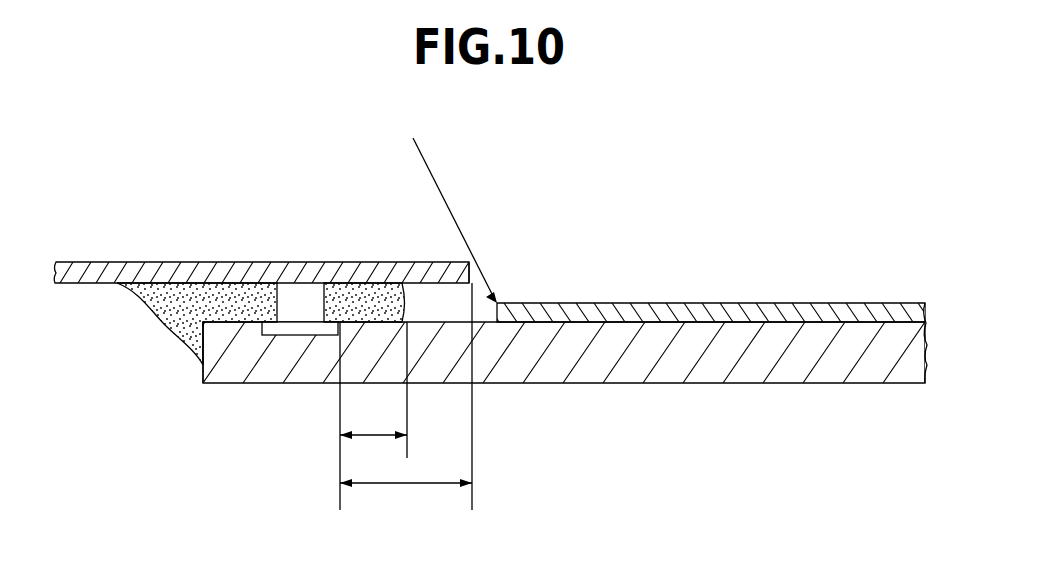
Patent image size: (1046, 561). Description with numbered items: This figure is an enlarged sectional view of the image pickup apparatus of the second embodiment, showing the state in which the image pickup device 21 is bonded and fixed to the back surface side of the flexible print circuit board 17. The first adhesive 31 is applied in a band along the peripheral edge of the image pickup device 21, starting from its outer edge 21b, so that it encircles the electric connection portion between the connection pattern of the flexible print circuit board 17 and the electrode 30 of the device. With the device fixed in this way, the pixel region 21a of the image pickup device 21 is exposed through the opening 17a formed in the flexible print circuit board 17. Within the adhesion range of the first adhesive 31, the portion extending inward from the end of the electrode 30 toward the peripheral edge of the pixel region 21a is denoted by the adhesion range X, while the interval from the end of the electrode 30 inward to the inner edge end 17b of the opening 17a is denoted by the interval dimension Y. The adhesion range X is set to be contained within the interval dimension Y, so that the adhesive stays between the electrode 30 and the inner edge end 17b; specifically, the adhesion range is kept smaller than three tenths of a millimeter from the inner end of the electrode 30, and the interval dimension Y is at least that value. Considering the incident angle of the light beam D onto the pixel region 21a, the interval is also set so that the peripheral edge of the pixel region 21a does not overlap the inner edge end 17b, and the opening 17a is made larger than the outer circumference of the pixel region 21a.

The flexible print circuit board 17 is at (345, 272).
The opening 17a is at (633, 262).
The inner edge end 17b is at (476, 267).
The image pickup device 21 is at (713, 360).
The pixel region 21a is at (710, 313).
The outer edge 21b is at (194, 343).
The electrode 30 is at (297, 328).
The first adhesive 31 is at (190, 300).
The light beam D is at (437, 183).
The adhesion range X is at (373, 416).
The interval dimension Y is at (406, 397).